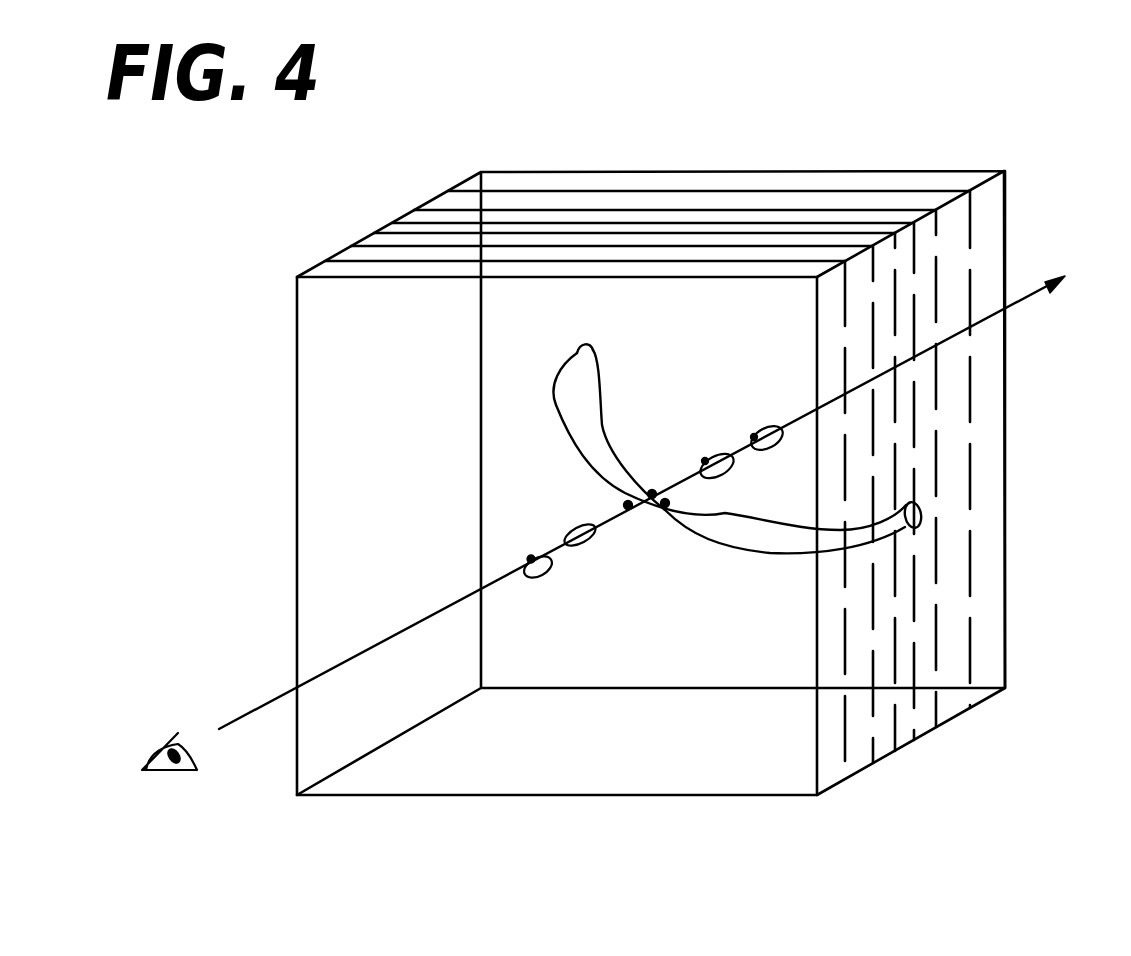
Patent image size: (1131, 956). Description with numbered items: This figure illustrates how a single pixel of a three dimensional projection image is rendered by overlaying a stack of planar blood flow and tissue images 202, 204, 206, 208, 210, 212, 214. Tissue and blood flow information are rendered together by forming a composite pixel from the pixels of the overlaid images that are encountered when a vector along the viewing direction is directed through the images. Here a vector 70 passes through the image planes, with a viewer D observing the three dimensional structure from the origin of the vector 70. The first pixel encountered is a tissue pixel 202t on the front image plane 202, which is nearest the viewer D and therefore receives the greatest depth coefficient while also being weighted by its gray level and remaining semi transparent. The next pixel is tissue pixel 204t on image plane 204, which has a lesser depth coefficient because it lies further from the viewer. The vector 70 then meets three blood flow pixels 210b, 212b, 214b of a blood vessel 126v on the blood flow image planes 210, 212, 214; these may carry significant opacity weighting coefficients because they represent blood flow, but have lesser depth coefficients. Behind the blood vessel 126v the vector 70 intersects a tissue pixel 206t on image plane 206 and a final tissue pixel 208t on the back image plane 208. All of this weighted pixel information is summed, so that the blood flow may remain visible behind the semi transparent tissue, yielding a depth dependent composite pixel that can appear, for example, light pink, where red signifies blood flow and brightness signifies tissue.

The vector 70 is at (376, 646).
The viewer D is at (186, 772).
The blood vessel 126v is at (572, 373).
The image plane 202 is at (845, 752).
The image plane 204 is at (881, 742).
The image plane 206 is at (972, 654).
The image plane 208 is at (1007, 573).
The image plane 210 is at (898, 735).
The image plane 212 is at (930, 720).
The image plane 214 is at (945, 705).
The tissue pixel 202t is at (534, 561).
The tissue pixel 204t is at (587, 544).
The tissue pixel 206t is at (720, 472).
The tissue pixel 208t is at (754, 433).
The blood flow pixel 210b is at (623, 507).
The blood flow pixel 212b is at (655, 510).
The blood flow pixel 214b is at (657, 490).